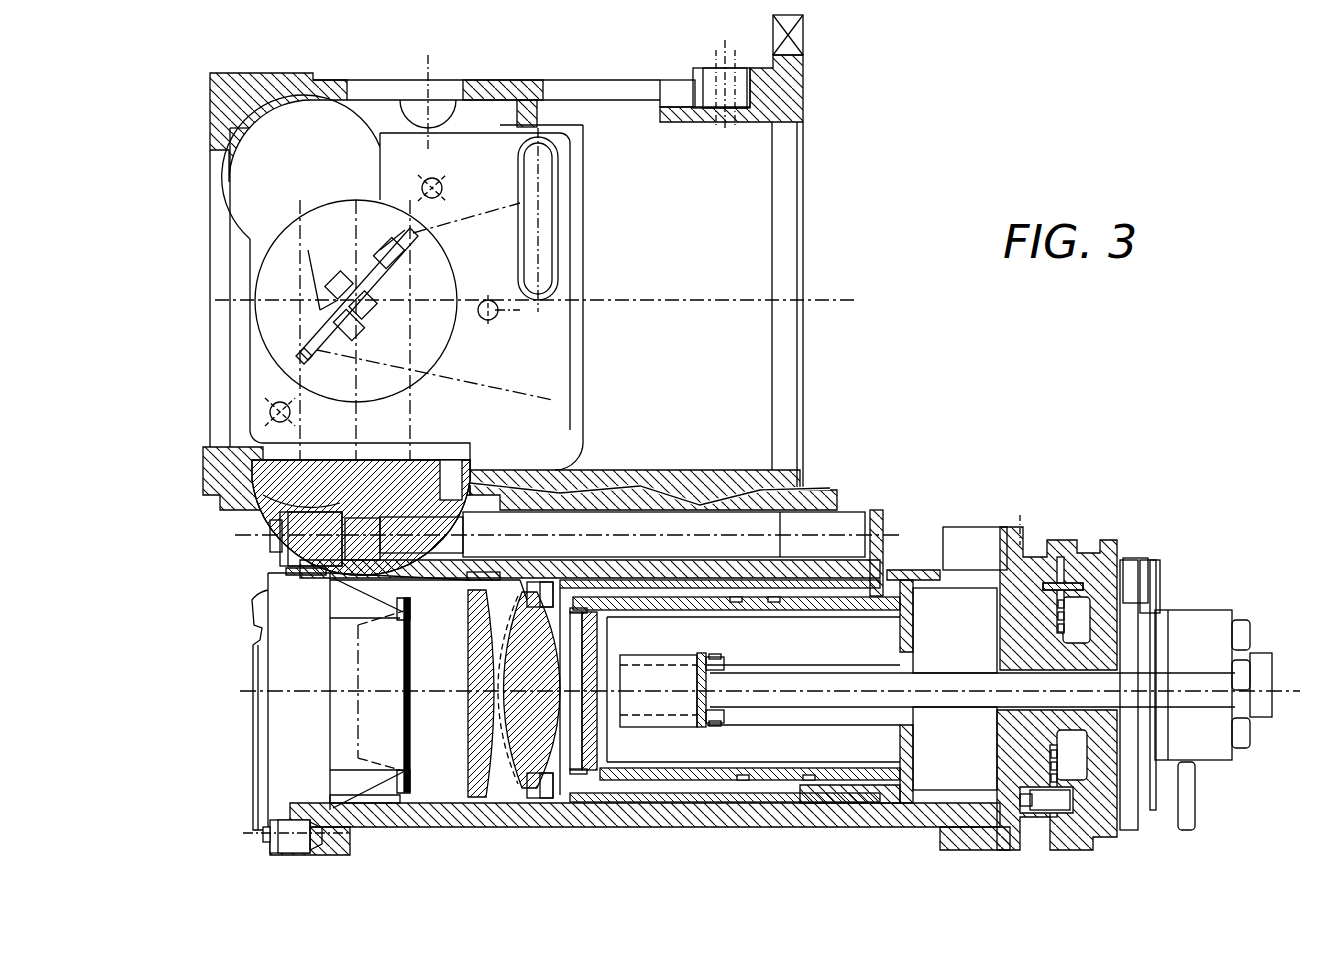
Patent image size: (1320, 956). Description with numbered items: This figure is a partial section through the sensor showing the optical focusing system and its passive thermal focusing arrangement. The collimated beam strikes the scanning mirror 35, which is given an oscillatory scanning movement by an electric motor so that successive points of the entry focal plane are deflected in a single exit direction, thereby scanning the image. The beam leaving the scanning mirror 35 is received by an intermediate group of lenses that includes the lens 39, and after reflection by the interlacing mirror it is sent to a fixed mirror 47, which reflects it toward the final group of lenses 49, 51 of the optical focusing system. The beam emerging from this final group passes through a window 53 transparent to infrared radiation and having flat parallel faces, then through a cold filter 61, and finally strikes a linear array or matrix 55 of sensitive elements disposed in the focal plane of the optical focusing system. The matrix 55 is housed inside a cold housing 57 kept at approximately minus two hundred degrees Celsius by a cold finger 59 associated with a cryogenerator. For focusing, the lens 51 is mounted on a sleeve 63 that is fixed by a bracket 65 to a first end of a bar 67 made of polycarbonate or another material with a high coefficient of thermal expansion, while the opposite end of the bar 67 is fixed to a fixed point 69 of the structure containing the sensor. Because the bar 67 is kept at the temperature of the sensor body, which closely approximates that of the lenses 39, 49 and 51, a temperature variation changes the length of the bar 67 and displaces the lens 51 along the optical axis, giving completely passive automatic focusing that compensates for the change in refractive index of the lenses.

The scanning mirror 35 is at (372, 256).
The lens of intermediate group 39 is at (268, 502).
The fixed mirror 47 is at (382, 652).
The lens of final group 49 is at (478, 722).
The lens of final group 51 is at (520, 648).
The window 53 is at (597, 633).
The linear array or matrix of sensitive elements 55 is at (703, 730).
The cold housing 57 is at (863, 605).
The cold finger 59 is at (943, 682).
The filter 61 is at (664, 655).
The sleeve 63 is at (791, 590).
The bracket 65 is at (886, 518).
The bar 67 is at (746, 527).
The fixed point 69 is at (300, 547).